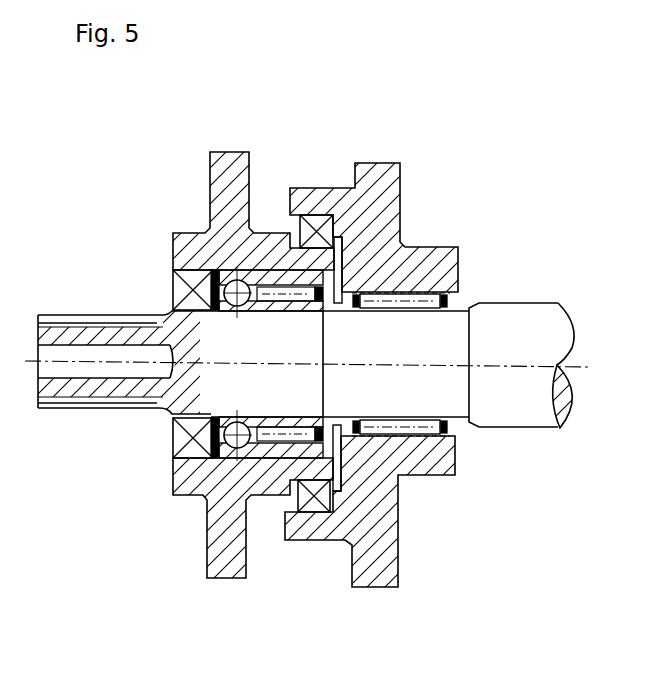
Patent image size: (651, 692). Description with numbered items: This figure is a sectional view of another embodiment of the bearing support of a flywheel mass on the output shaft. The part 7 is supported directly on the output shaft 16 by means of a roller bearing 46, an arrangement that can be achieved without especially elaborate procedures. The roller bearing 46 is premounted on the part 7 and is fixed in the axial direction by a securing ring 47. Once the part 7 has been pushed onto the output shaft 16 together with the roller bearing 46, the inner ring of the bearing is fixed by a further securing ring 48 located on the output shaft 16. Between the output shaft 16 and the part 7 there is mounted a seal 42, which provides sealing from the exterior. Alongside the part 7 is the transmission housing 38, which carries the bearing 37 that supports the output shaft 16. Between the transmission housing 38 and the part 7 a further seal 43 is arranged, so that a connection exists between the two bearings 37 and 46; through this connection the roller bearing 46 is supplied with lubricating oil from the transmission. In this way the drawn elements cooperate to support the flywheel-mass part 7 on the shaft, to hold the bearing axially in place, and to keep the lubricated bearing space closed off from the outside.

The part 7 is at (220, 545).
The output shaft 16 is at (517, 408).
The bearing 37 is at (407, 292).
The transmission housing 38 is at (370, 548).
The seal 42 is at (180, 433).
The further seal 43 is at (328, 233).
The roller bearing 46 is at (270, 447).
The securing ring 47 is at (190, 390).
The securing ring 48 is at (213, 306).